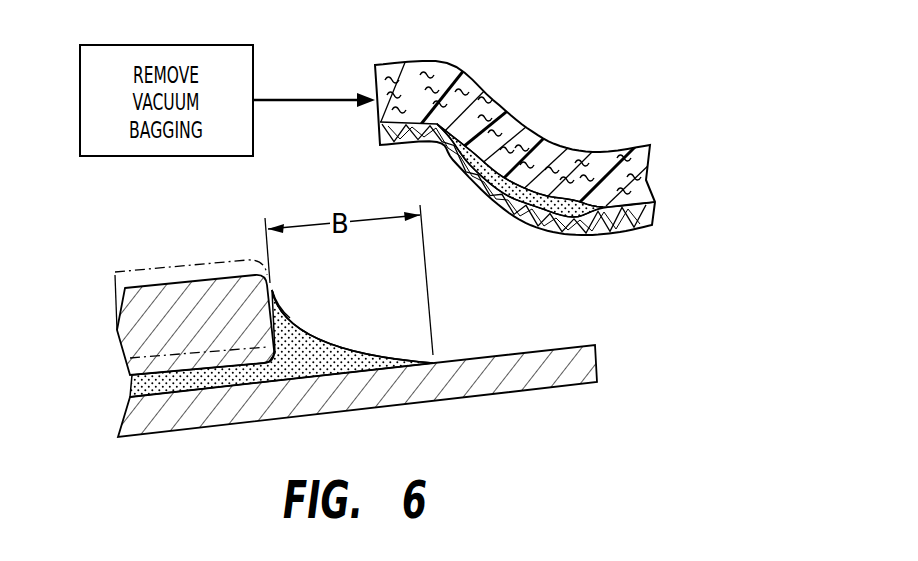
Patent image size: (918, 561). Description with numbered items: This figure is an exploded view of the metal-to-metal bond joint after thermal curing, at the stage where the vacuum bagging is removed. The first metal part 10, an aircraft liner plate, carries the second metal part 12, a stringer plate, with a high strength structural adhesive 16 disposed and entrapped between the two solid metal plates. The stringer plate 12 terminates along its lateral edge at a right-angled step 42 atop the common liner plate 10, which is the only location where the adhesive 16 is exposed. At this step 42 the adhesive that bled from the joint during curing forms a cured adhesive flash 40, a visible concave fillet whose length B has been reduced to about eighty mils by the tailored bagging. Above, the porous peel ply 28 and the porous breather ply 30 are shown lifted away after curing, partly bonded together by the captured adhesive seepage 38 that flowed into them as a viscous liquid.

The first metal part 10 is at (127, 410).
The second metal part 12 is at (115, 333).
The structural adhesive 16 is at (132, 387).
The peel ply 28 is at (650, 215).
The breather ply 30 is at (551, 151).
The adhesive seepage 38 is at (523, 160).
The cured adhesive flash 40 is at (320, 335).
The right-angled step 42 is at (280, 300).